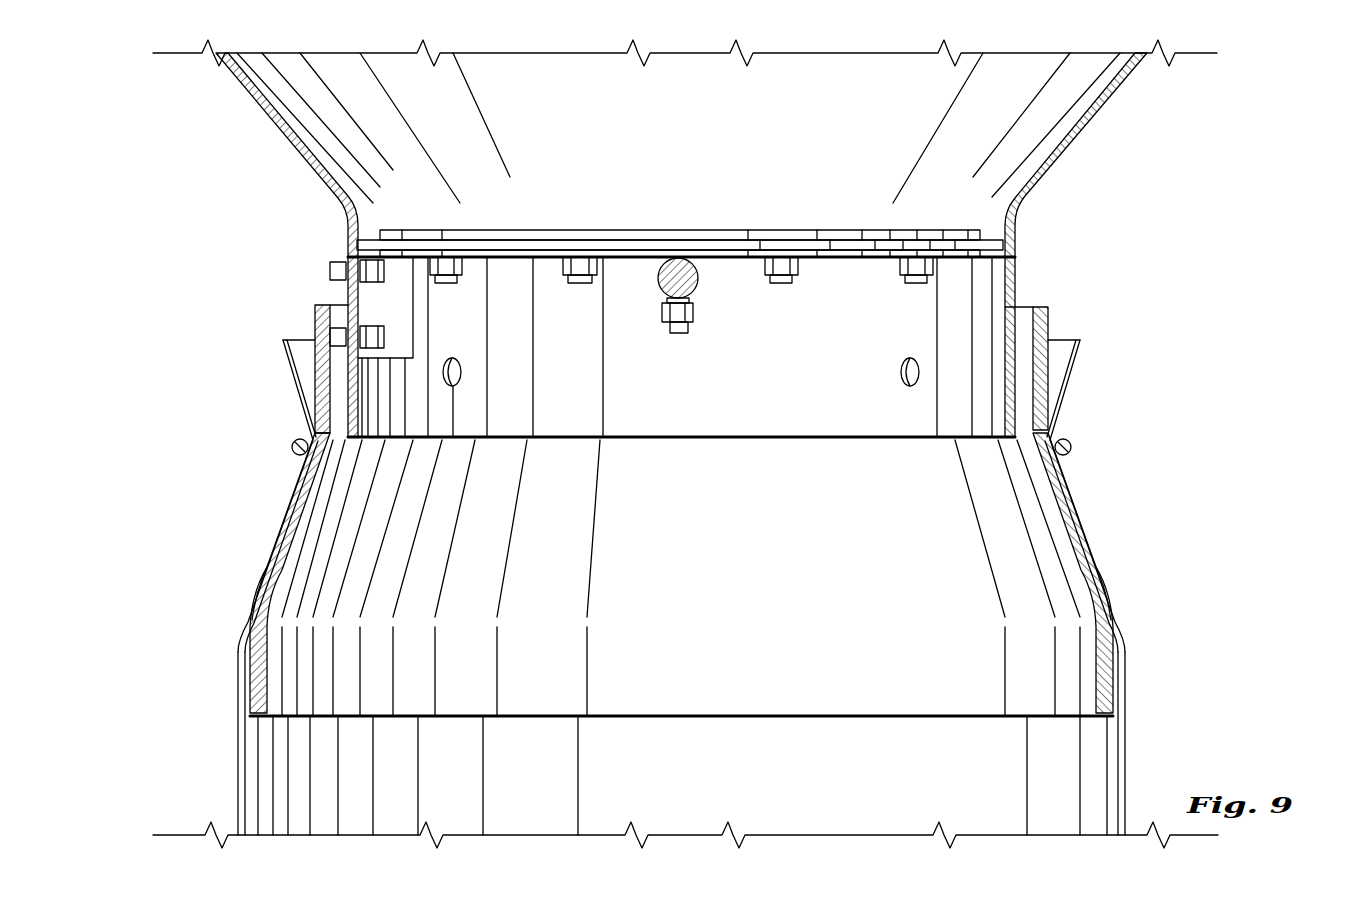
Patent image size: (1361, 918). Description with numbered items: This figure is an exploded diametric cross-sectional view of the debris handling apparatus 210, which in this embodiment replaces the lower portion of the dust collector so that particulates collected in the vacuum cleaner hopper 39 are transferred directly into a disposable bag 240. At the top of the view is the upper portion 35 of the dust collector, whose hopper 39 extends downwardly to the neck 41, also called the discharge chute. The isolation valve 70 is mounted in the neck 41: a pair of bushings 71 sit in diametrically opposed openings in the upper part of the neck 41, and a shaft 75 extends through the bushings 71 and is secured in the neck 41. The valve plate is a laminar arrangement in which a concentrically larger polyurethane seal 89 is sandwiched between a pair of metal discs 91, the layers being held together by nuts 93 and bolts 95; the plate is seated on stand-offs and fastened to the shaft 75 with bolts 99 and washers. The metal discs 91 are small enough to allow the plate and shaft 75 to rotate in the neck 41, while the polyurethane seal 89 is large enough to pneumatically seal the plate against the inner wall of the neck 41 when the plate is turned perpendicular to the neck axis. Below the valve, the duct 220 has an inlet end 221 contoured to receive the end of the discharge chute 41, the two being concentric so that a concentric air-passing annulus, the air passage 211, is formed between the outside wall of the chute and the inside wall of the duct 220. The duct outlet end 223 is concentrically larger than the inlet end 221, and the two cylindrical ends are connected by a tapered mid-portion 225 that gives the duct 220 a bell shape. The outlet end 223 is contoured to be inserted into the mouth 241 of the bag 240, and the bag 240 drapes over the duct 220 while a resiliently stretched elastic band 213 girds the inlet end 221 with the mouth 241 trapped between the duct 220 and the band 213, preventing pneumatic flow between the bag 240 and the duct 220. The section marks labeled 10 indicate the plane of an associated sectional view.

The section line 10- 10 is at (258, 218).
The upper portion 35 is at (268, 164).
The hopper 39 is at (246, 96).
The neck 41 is at (1018, 268).
The isolation valve 70 is at (653, 230).
The bushings 71 is at (707, 262).
The shaft 75 is at (670, 283).
The polyurethane seal 89 is at (367, 233).
The metal discs 91 is at (522, 236).
The nuts 93 is at (570, 276).
The bolts 95 is at (447, 284).
The bolts 99 is at (680, 334).
The debris handling apparatus 210 is at (238, 506).
The air passage 211 is at (337, 395).
The elastic band 213 is at (292, 448).
The duct 220 is at (667, 718).
The inlet end 221 is at (317, 327).
The outlet end 223 is at (255, 693).
The tapered mid-portion 225 is at (273, 570).
The disposable bag 240 is at (237, 757).
The mouth 241 is at (287, 373).